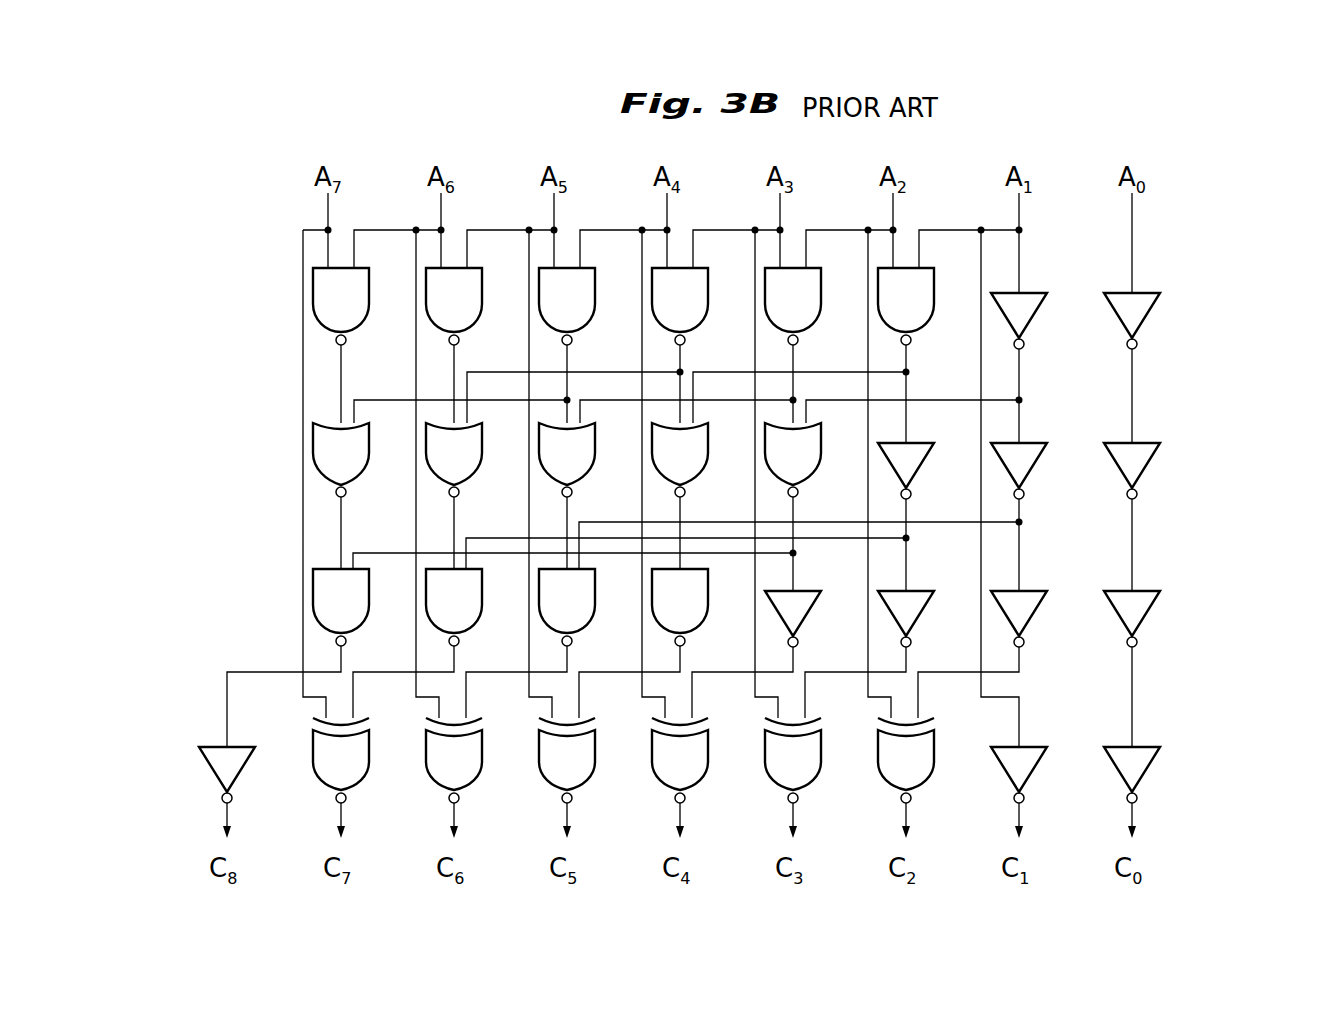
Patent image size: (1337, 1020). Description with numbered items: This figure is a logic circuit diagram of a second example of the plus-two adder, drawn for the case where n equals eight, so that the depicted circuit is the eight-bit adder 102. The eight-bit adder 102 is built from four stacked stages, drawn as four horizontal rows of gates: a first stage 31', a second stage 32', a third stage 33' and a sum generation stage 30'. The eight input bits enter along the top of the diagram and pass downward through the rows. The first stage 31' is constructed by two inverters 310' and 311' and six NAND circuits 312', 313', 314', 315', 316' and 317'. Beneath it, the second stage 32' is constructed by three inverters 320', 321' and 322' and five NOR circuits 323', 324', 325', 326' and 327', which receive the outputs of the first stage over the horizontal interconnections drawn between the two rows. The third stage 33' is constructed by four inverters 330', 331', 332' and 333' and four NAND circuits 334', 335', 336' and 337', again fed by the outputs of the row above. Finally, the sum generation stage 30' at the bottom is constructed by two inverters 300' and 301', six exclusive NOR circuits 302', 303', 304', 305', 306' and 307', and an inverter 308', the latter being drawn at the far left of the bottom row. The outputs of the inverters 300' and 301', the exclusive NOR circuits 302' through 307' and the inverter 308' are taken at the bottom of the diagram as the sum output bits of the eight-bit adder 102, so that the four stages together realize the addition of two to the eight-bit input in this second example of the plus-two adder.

The 8-bit adder 102 is at (1208, 102).
The first stage 31' is at (1270, 311).
The second stage 32' is at (1270, 464).
The third stage 33' is at (1270, 611).
The sum generation stage 30' is at (1270, 773).
The NAND circuit 317' is at (361, 317).
The NAND circuit 316' is at (474, 317).
The NAND circuit 315' is at (587, 317).
The NAND circuit 314' is at (700, 317).
The NAND circuit 313' is at (813, 317).
The NAND circuit 312' is at (926, 317).
The inverter 311' is at (1039, 329).
The inverter 310' is at (1152, 329).
The NOR circuit 327' is at (361, 467).
The NOR circuit 326' is at (474, 467).
The NOR circuit 325' is at (587, 467).
The NOR circuit 324' is at (700, 467).
The NOR circuit 323' is at (813, 467).
The inverter 322' is at (926, 477).
The inverter 321' is at (1039, 477).
The inverter 320' is at (1152, 477).
The NAND circuit 337' is at (361, 615).
The NAND circuit 336' is at (474, 615).
The NAND circuit 335' is at (587, 615).
The NAND circuit 334' is at (700, 615).
The inverter 333' is at (813, 626).
The inverter 332' is at (926, 626).
The inverter 331' is at (1039, 626).
The inverter 330' is at (1152, 626).
The inverter 308' is at (247, 780).
The exclusive NOR circuit 307' is at (361, 766).
The exclusive NOR circuit 306' is at (474, 766).
The exclusive NOR circuit 305' is at (587, 766).
The exclusive NOR circuit 304' is at (700, 766).
The exclusive NOR circuit 303' is at (813, 766).
The exclusive NOR circuit 302' is at (926, 766).
The inverter 301' is at (1039, 780).
The inverter 300' is at (1152, 780).